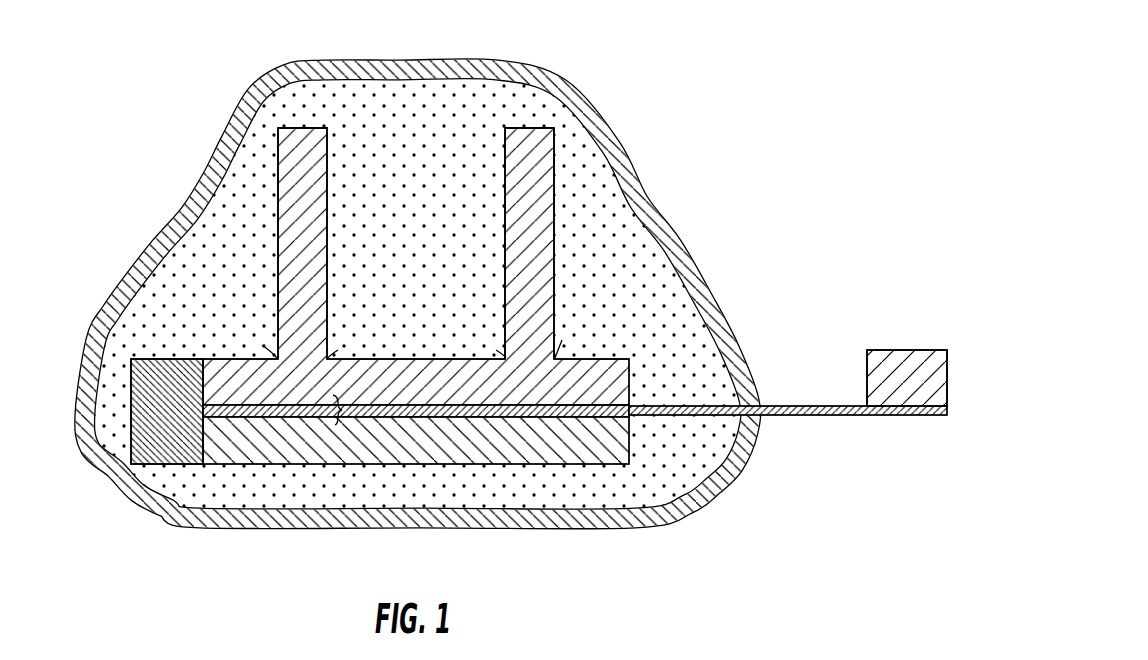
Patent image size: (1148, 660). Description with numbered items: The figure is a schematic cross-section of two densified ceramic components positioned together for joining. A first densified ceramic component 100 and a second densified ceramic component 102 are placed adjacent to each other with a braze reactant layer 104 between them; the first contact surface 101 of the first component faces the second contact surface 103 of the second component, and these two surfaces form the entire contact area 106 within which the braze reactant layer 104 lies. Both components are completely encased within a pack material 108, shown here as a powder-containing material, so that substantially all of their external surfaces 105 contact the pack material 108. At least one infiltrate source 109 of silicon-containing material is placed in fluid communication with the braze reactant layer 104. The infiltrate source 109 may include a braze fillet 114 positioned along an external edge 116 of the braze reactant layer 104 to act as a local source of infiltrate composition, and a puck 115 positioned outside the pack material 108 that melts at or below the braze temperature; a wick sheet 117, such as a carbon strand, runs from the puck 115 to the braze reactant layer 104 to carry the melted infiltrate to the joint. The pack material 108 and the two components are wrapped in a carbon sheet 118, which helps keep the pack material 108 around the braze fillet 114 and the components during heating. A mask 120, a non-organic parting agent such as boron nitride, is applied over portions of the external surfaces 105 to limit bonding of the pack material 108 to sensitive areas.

The first densified ceramic component 100 is at (418, 300).
The first contact surface 101 is at (538, 408).
The second densified ceramic component 102 is at (443, 452).
The second contact surface 103 is at (615, 417).
The braze reactant layer 104 is at (578, 408).
The external surfaces 105 is at (336, 164).
The contact area 106 is at (342, 410).
The pack material 108 is at (430, 145).
The infiltrate source 109 is at (921, 345).
The braze fillet 114 is at (167, 453).
The puck 115 is at (888, 360).
The external edge 116 is at (202, 411).
The wick sheet 117 is at (800, 420).
The carbon sheet 118 is at (620, 152).
The mask 120 is at (262, 345).